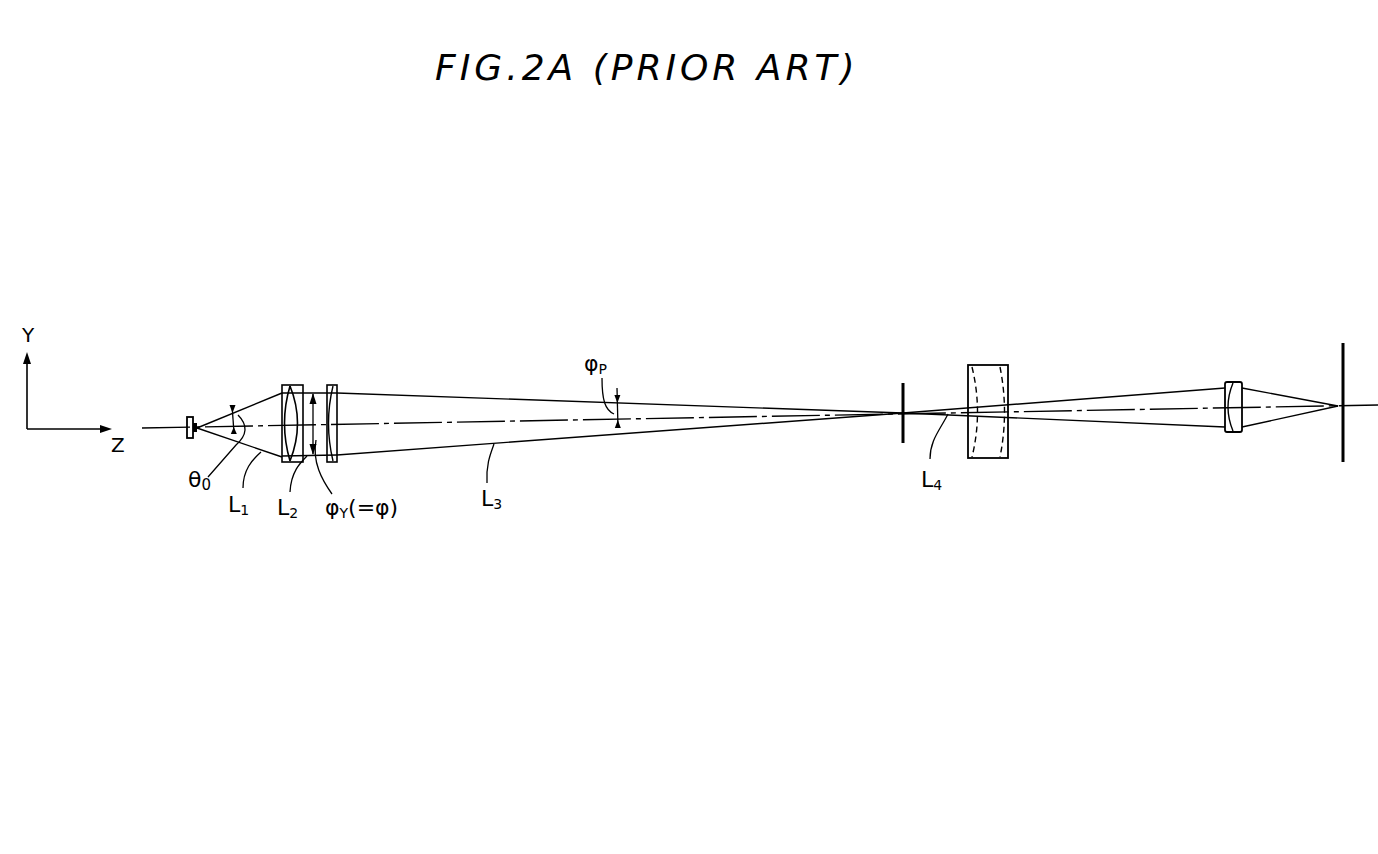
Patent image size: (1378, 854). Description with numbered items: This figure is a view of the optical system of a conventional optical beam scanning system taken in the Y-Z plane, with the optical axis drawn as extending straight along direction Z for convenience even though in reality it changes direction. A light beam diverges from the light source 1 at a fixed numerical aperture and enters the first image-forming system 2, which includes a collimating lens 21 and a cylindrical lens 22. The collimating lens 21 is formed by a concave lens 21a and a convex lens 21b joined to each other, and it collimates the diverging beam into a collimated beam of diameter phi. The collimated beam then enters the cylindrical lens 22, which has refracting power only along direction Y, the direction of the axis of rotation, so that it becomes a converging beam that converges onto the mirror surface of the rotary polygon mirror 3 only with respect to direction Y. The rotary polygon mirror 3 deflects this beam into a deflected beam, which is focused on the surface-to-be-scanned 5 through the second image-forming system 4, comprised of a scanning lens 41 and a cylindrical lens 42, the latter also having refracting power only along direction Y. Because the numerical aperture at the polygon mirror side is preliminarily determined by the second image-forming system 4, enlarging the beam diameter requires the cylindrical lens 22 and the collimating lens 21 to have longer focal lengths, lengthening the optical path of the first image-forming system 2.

The light source 1 is at (191, 417).
The first image-forming system 2 is at (392, 262).
The collimating lens 21 is at (342, 315).
The concave lens 21a is at (282, 387).
The convex lens 21b is at (298, 387).
The cylindrical lens 22 is at (333, 386).
The rotary polygon mirror 3 is at (894, 383).
The second image-forming system 4 is at (1253, 313).
The scanning lens 41 is at (984, 364).
The cylindrical lens 42 is at (1232, 382).
The surface-to-be-scanned 5 is at (1340, 360).